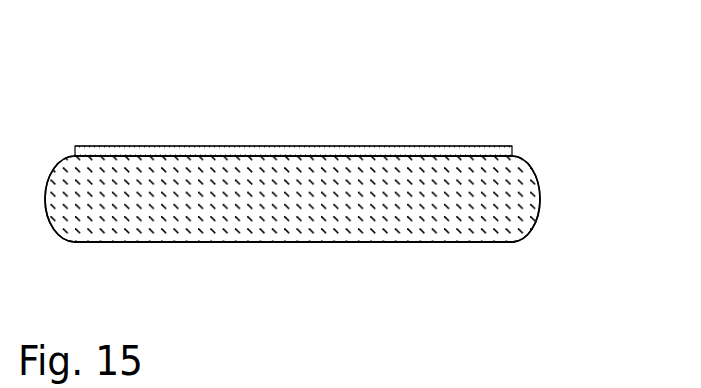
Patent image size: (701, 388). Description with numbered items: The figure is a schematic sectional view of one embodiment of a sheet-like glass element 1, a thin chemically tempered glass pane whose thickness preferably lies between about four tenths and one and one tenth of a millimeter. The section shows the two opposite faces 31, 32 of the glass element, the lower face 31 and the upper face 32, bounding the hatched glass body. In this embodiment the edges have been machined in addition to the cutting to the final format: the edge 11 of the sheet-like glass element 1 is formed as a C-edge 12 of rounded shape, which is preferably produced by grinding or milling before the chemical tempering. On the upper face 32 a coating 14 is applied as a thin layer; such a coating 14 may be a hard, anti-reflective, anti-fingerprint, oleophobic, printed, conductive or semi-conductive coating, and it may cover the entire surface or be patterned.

The sheet-like glass element 1 is at (216, 106).
The edge 11 is at (532, 170).
The C-edge 12 is at (292, 199).
The coating 14 is at (333, 147).
The face 31 is at (273, 243).
The face 32 is at (112, 146).